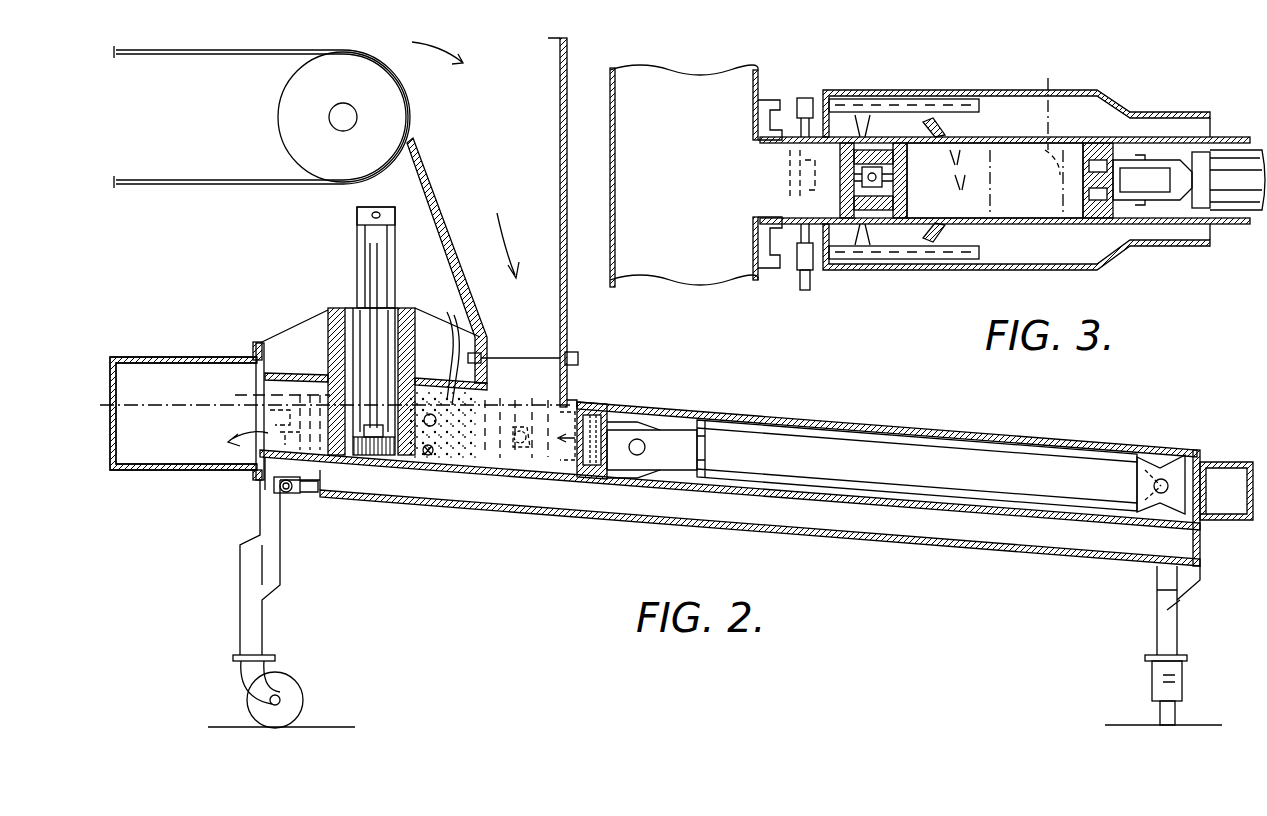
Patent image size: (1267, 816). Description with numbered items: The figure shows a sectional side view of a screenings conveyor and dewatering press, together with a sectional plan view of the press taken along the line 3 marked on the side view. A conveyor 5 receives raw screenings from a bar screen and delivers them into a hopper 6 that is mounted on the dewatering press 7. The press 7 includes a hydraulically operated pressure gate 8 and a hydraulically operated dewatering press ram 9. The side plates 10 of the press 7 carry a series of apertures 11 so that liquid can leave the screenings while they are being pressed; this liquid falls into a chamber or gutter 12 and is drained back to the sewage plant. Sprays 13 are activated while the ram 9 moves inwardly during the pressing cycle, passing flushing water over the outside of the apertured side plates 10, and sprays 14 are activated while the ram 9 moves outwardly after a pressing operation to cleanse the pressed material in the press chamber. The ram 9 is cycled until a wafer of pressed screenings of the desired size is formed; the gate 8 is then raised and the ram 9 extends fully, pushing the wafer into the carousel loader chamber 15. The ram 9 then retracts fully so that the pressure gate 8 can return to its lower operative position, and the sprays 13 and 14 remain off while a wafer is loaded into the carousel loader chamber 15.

In FIG. 2, the hydraulic cylinder 3 is at (727, 443).
In FIG. 2, the conveyor 5 is at (416, 128).
In FIG. 2, the hopper 6 is at (560, 145).
In FIG. 3, the hopper 6 is at (1051, 96).
In FIG. 2, the dewatering press 7 is at (506, 497).
In FIG. 2, the pressure gate 8 is at (357, 367).
In FIG. 3, the pressure gate 8 is at (872, 167).
In FIG. 2, the dewatering press ram 9 is at (627, 402).
In FIG. 3, the dewatering press ram 9 is at (1100, 150).
In FIG. 2, the side plates 10 is at (421, 458).
In FIG. 3, the side plates 10 is at (1018, 140).
In FIG. 2, the apertures 11 is at (447, 343).
In FIG. 3, the apertures 11 is at (950, 225).
In FIG. 2, the chamber or gutter 12 is at (557, 493).
In FIG. 3, the chamber or gutter 12 is at (1152, 112).
In FIG. 2, the sprays 13 is at (266, 393).
In FIG. 3, the sprays 13 is at (905, 105).
In FIG. 2, the sprays 14 is at (430, 456).
In FIG. 3, the sprays 14 is at (935, 118).
In FIG. 2, the carousel loader chamber 15 is at (162, 425).
In FIG. 3, the carousel loader chamber 15 is at (690, 195).